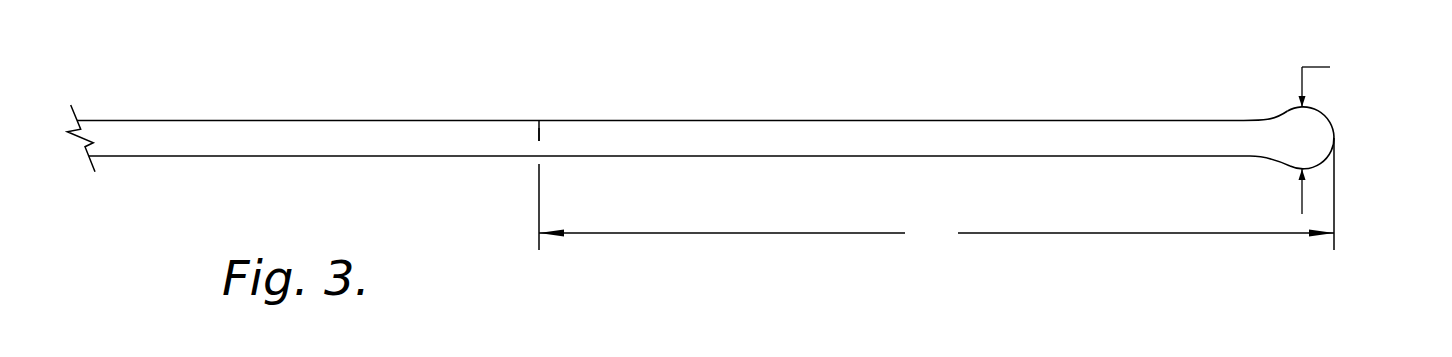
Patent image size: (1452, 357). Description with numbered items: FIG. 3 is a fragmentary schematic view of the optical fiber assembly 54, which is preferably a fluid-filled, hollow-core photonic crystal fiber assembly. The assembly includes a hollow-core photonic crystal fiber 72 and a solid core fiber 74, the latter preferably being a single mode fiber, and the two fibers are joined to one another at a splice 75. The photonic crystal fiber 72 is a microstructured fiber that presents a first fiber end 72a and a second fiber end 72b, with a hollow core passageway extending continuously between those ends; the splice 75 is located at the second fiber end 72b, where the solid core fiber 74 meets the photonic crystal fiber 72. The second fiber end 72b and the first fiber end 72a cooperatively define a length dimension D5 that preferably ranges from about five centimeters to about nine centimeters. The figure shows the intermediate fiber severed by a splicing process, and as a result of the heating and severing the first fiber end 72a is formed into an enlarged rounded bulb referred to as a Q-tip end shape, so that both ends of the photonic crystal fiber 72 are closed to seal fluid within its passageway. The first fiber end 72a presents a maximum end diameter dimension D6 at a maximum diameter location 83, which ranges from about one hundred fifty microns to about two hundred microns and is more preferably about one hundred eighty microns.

The optical fiber assembly 54 is at (1197, 48).
The hollow-core photonic crystal fiber 72 is at (860, 120).
The first fiber end 72a is at (1343, 147).
The second fiber end 72b is at (539, 107).
The solid core fiber 74 is at (280, 120).
The splice 75 is at (539, 140).
The maximum diameter location 83 is at (1262, 110).
The length dimension D5 is at (936, 194).
The maximum end diameter dimension D6 is at (1336, 133).